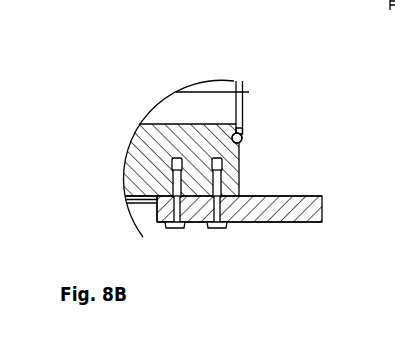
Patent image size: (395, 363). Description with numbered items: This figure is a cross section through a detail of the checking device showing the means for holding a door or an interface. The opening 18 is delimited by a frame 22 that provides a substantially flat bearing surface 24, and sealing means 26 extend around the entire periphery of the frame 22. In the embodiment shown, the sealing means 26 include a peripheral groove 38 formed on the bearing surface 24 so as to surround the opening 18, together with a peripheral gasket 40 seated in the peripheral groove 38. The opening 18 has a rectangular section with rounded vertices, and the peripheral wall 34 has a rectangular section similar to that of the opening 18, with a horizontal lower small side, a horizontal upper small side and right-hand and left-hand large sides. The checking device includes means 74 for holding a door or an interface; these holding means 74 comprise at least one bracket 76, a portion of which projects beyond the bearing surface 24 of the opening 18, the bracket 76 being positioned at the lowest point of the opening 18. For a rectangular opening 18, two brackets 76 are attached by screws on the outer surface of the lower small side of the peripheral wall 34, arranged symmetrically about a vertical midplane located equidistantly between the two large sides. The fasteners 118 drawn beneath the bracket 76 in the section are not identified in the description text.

The opening 18 is at (235, 81).
The frame 22 is at (238, 164).
The bearing surface 24 is at (242, 179).
The sealing means 26 is at (246, 136).
The peripheral wall 34 is at (121, 182).
The peripheral groove 38 is at (215, 125).
The peripheral gasket 40 is at (242, 132).
The means for holding a door or an interface 74 is at (310, 224).
The bracket 76 is at (261, 214).
The fasteners 118 is at (209, 229).